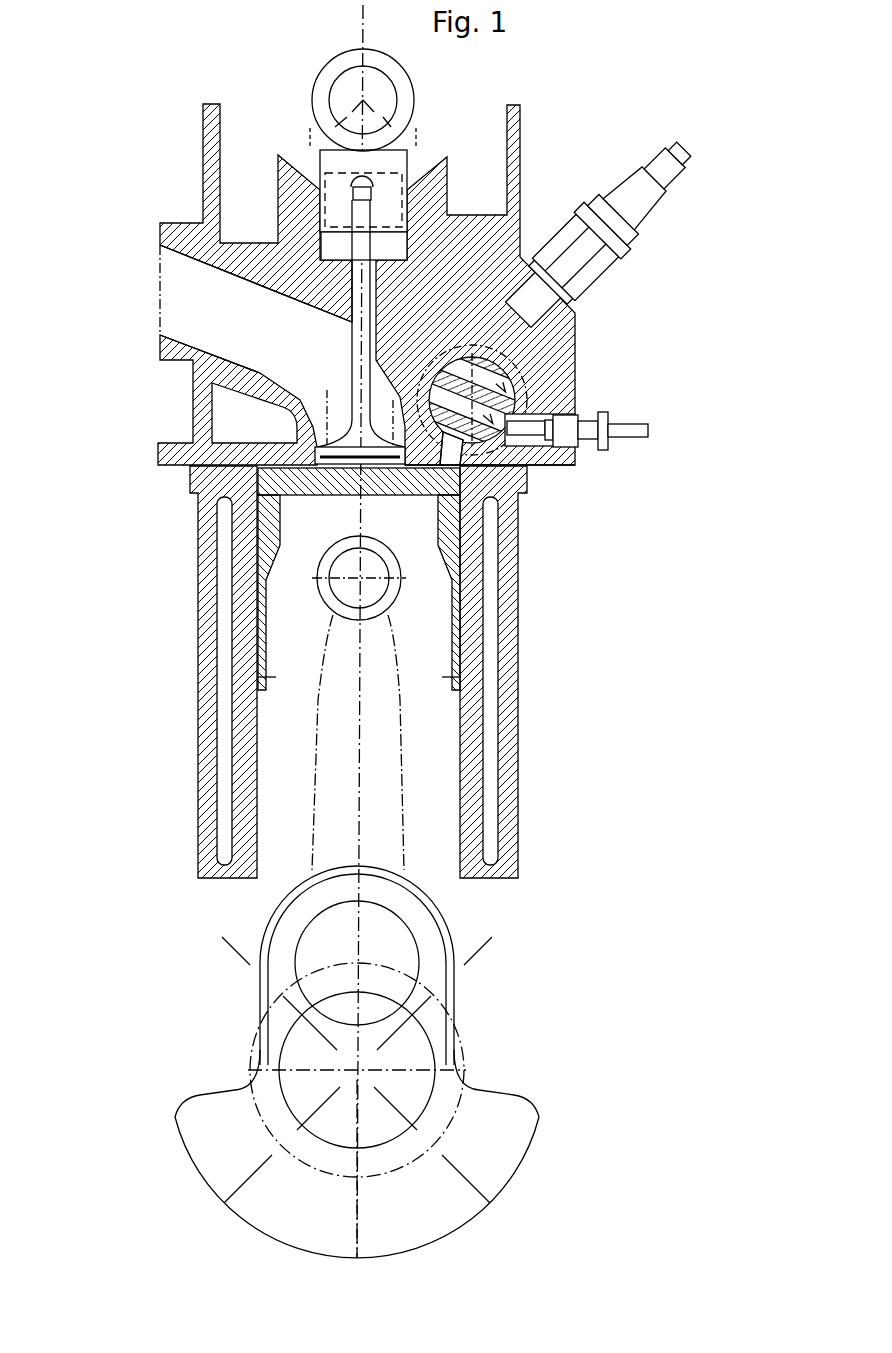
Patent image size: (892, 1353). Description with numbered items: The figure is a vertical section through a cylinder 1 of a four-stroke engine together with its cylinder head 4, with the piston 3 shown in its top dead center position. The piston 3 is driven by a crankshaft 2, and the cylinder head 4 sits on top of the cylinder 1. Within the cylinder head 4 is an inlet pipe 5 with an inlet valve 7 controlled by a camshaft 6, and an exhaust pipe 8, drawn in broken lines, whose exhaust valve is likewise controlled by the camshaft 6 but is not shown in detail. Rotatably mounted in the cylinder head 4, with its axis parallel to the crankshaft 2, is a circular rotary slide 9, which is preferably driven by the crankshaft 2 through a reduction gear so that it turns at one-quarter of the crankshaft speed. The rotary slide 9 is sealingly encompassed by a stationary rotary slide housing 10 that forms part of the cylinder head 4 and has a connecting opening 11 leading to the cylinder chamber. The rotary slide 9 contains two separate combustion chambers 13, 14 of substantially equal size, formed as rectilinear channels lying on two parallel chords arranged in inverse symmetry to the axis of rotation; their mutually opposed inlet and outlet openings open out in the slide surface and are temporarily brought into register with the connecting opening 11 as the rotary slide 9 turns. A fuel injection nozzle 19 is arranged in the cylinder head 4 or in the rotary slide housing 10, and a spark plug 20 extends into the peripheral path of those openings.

The cylinder 1 is at (197, 735).
The crankshaft 2 is at (265, 1022).
The piston 3 is at (275, 490).
The cylinder head 4 is at (200, 408).
The inlet pipe 5 is at (200, 307).
The camshaft 6 is at (332, 85).
The inlet valve 7 is at (347, 483).
The exhaust pipe 8 is at (332, 387).
The rotary slide 9 is at (573, 333).
The rotary slide housing 10 is at (530, 382).
The connecting opening 11 is at (448, 452).
The combustion chamber 13 is at (530, 465).
The combustion chamber 14 is at (555, 465).
The fuel injection nozzle 19 is at (627, 263).
The spark plug 20 is at (643, 437).